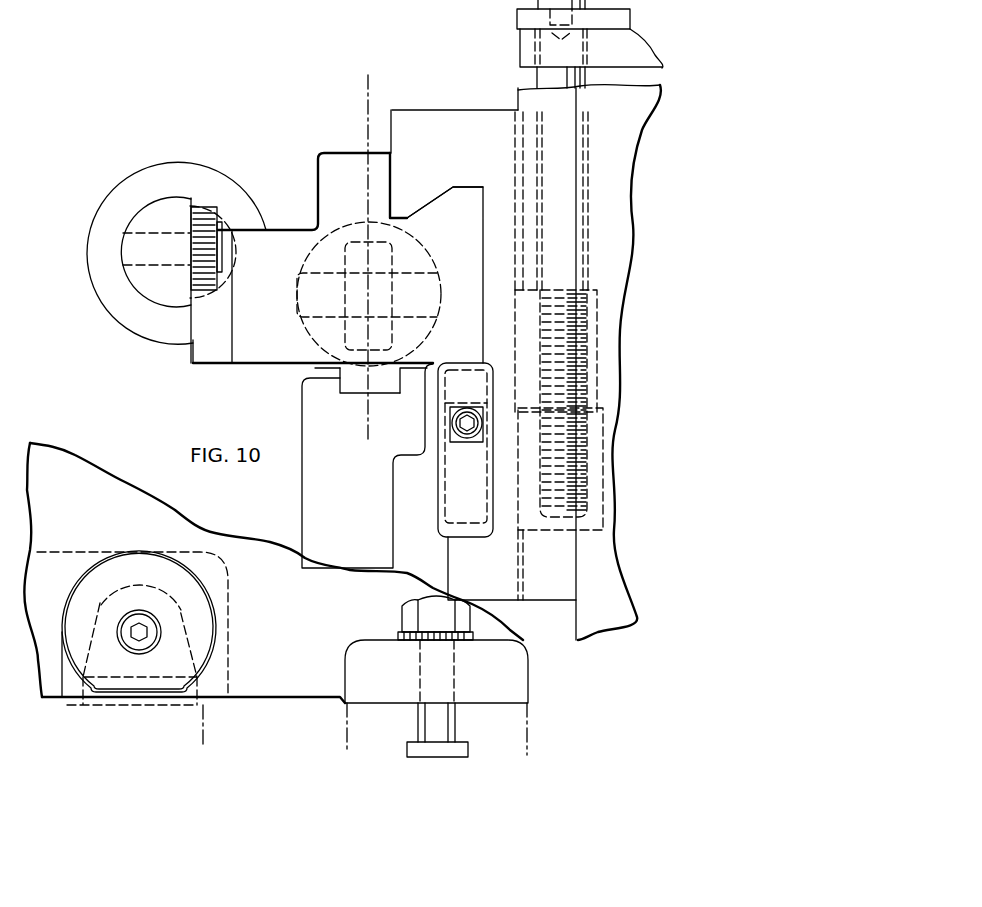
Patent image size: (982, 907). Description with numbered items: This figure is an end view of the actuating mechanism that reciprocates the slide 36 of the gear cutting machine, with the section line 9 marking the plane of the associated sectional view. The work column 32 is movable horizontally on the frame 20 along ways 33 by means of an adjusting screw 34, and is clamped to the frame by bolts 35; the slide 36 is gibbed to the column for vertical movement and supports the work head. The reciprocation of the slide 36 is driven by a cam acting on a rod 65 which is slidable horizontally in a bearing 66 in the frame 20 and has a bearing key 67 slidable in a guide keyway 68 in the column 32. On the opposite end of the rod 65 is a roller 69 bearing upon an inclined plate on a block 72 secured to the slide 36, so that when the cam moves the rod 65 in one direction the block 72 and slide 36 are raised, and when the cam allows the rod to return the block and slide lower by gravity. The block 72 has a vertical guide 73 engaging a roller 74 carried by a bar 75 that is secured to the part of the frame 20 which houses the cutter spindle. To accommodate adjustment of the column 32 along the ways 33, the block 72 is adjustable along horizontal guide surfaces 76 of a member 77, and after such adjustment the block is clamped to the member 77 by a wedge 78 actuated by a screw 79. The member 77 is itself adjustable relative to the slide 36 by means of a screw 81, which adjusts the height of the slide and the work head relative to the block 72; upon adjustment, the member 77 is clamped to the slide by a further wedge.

The section line 9 is at (400, 85).
The frame 20 is at (285, 731).
The work column 32 is at (353, 523).
The ways 33 is at (510, 703).
The adjusting screw 34 is at (138, 620).
The bolts 35 is at (430, 602).
The slide 36 is at (625, 159).
The rod 65 is at (427, 247).
The bearing 66 is at (380, 390).
The bearing key 67 is at (360, 387).
The guide keyway 68 is at (340, 382).
The roller 69 is at (392, 263).
The block 72 is at (351, 196).
The vertical guide 73 is at (194, 355).
The roller 74 is at (193, 217).
The bar 75 is at (168, 202).
The horizontal guide surfaces 76 is at (483, 220).
The member 77 is at (460, 159).
The wedge 78 is at (465, 450).
The screw 79 is at (467, 445).
The screw 81 is at (497, 1).